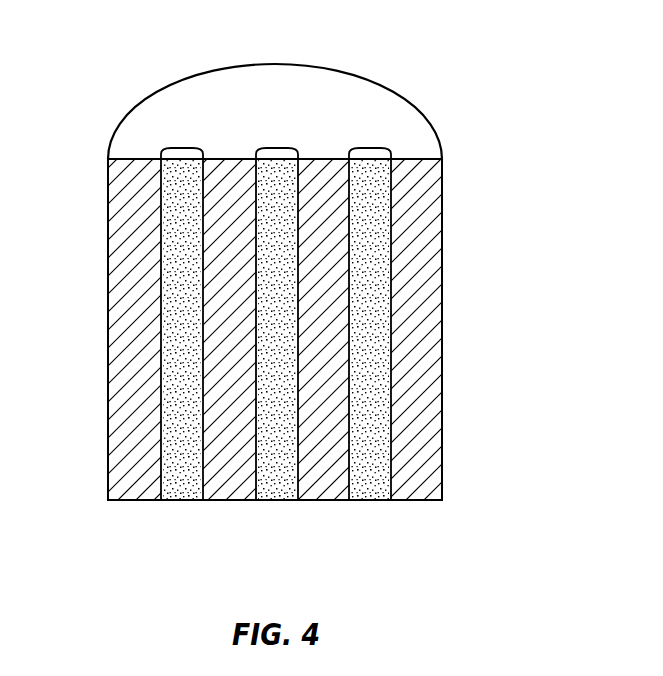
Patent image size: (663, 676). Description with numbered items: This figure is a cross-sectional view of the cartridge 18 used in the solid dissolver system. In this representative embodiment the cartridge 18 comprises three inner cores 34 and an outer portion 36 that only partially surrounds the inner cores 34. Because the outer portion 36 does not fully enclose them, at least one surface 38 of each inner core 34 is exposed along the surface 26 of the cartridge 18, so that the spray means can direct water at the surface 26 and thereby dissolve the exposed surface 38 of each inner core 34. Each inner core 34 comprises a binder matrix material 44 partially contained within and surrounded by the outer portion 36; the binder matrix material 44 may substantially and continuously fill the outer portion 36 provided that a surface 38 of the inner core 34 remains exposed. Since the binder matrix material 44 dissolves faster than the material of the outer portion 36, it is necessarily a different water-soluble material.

The cartridge 18 is at (415, 131).
The surface of the cartridge 26 is at (115, 501).
The inner core 34 is at (175, 498).
The outer portion 36 is at (133, 482).
The exposed surface of inner core 38 is at (182, 152).
The binder matrix material 44 is at (180, 300).